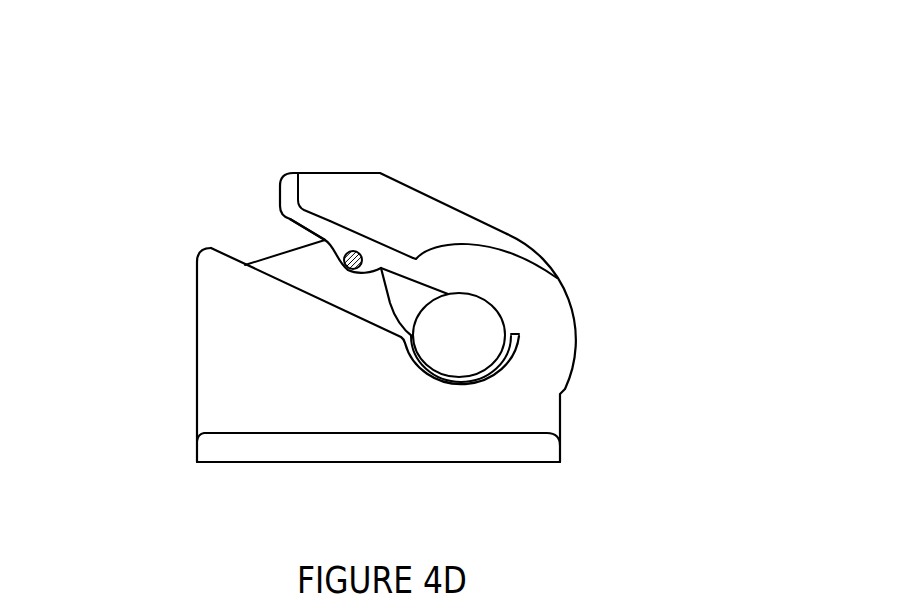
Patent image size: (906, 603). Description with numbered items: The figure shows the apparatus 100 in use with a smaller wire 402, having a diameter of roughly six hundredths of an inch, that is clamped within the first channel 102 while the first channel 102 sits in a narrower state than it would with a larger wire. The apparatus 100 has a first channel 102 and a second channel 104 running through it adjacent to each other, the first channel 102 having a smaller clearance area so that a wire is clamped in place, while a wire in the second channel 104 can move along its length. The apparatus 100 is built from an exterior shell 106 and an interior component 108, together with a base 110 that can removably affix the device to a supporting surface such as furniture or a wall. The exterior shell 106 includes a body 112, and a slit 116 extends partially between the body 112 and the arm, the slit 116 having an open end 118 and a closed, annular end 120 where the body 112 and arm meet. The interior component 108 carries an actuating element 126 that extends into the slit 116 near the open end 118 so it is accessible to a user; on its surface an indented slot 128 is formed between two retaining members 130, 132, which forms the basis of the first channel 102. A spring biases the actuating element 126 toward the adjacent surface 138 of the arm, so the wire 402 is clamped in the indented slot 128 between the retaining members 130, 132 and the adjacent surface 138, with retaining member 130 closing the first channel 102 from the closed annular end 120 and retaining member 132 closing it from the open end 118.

The apparatus 100 is at (647, 140).
The first channel 102 is at (367, 263).
The second channel 104 is at (457, 332).
The exterior shell 106 is at (562, 410).
The interior component 108 is at (258, 265).
The base 110 is at (260, 460).
The body 112 is at (197, 355).
The slit 116 is at (422, 305).
The open end 118 is at (287, 247).
The closed annular end 120 is at (483, 352).
The actuating element 126 is at (277, 270).
The indented slot 128 is at (345, 250).
The retaining member 130 is at (381, 270).
The retaining member 132 is at (333, 252).
The adjacent surface 138 is at (298, 225).
The smaller wire 402 is at (356, 255).